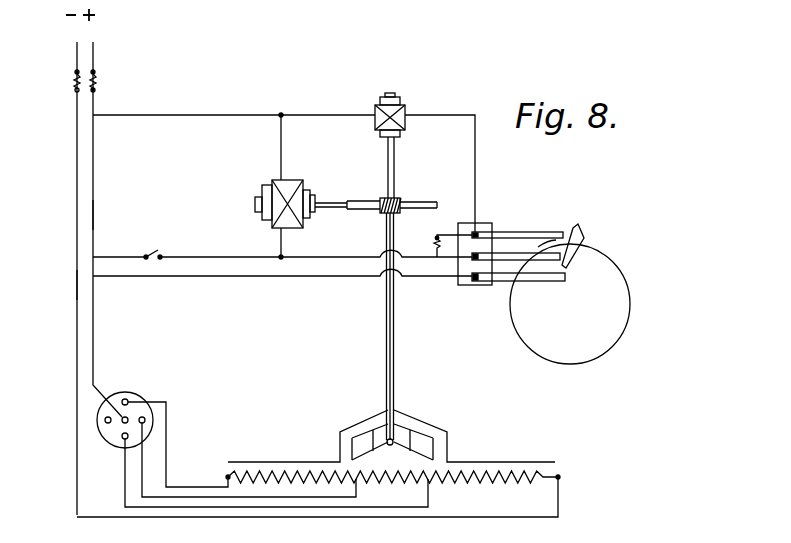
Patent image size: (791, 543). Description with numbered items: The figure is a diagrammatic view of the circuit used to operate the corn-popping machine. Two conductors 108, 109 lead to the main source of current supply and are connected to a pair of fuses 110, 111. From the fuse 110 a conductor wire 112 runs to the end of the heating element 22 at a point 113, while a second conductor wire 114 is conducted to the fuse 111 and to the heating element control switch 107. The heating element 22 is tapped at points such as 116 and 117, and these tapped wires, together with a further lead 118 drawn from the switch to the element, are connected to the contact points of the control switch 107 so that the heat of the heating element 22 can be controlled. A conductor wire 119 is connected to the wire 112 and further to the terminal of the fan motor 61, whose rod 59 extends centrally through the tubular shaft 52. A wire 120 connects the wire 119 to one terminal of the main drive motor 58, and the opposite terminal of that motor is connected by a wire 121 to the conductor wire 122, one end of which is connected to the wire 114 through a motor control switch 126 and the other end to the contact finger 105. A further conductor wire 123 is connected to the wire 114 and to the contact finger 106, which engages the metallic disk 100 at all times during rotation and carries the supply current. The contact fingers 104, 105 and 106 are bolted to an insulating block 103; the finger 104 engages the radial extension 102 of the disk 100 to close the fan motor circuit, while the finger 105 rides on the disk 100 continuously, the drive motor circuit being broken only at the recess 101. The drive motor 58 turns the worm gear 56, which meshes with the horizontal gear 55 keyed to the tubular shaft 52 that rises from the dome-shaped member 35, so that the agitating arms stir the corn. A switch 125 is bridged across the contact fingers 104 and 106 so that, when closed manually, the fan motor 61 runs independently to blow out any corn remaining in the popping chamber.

The heating element 22 is at (513, 482).
The dome-shaped member 35 is at (508, 462).
The tubular shaft 52 is at (396, 339).
The horizontally disposed gear 55 is at (468, 182).
The worm gear 56 is at (400, 199).
The motor 58 is at (289, 180).
The shaft or rod 59 is at (395, 161).
The fan motor 61 is at (401, 100).
The metallic disk 100 is at (624, 303).
The recess 101 is at (565, 251).
The radial extension 102 is at (582, 233).
The insulating block 103 is at (466, 281).
The contact finger 104 is at (516, 232).
The contact finger 105 is at (502, 258).
The contact finger 106 is at (505, 282).
The heating element control switch 107 is at (141, 396).
The conductor 108 is at (75, 59).
The conductor 109 is at (114, 229).
The fuse 110 is at (74, 88).
The fuse 111 is at (96, 88).
The conductor wire 112 is at (76, 283).
The connection point 113 is at (560, 477).
The conductor wire 114 is at (94, 214).
The tap 116 is at (430, 499).
The tap 117 is at (359, 493).
The lead 118 is at (231, 488).
The conductor wire 119 is at (205, 119).
The wire 120 is at (276, 153).
The wire 121 is at (286, 248).
The conductor wire 122 is at (240, 254).
The conductor wire 123 is at (282, 278).
The switch 125 is at (436, 249).
The switch 126 is at (161, 248).